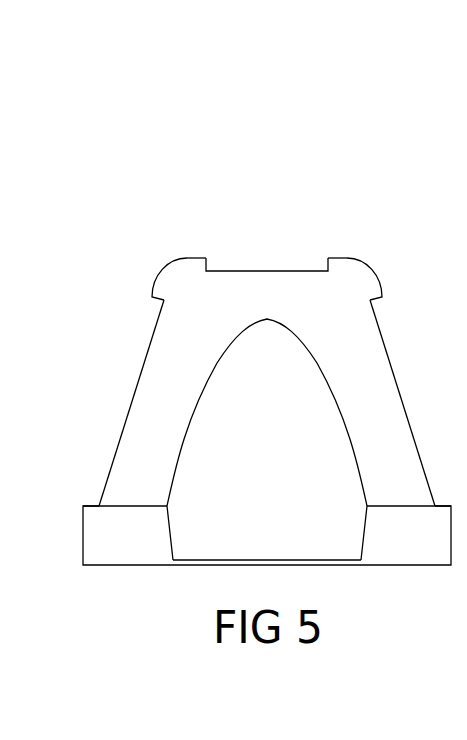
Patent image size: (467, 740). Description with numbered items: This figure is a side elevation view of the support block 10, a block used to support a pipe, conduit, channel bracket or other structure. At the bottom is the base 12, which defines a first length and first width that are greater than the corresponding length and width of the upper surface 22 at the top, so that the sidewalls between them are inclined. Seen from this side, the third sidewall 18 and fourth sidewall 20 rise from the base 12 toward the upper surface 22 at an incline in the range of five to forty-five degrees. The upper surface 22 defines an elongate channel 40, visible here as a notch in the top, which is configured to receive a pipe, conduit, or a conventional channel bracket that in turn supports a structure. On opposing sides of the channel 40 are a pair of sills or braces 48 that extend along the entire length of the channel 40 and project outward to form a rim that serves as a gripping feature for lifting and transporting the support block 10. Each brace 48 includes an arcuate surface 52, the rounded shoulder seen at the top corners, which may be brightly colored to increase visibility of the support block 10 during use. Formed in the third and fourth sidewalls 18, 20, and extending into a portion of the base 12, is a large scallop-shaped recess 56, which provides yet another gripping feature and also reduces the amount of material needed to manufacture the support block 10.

The support block 10 is at (230, 338).
The base 12 is at (70, 542).
The third sidewall 18 is at (82, 403).
The fourth sidewall 20 is at (378, 382).
The upper surface 22 is at (270, 244).
The elongate channel 40 is at (267, 271).
The braces 48 is at (189, 258).
The arcuate surface 52 is at (165, 270).
The scallop-shaped recess 56 is at (280, 483).